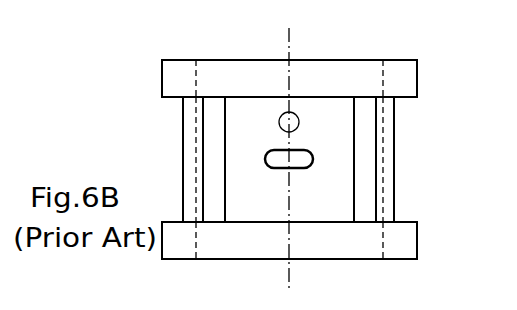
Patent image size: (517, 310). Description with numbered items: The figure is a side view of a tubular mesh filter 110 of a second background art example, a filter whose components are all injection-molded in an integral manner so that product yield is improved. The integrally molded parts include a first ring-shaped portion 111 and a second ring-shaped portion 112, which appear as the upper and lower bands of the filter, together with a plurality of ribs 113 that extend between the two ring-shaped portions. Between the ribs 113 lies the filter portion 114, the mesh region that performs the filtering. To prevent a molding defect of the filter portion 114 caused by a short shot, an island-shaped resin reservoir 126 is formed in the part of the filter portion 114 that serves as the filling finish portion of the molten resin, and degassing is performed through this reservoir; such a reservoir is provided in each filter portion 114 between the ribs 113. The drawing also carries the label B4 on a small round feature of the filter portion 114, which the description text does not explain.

The tubular mesh filter 110 is at (419, 54).
The first ring-shaped portion 111 is at (162, 60).
The second ring-shaped portion 112 is at (172, 250).
The rib 113 is at (213, 137).
The filter portion 114 is at (325, 186).
The hole B4 is at (298, 113).
The island-shaped resin reservoir 126 is at (280, 160).